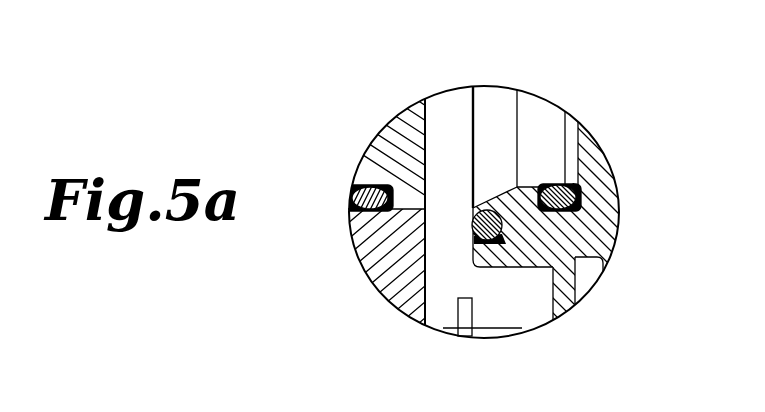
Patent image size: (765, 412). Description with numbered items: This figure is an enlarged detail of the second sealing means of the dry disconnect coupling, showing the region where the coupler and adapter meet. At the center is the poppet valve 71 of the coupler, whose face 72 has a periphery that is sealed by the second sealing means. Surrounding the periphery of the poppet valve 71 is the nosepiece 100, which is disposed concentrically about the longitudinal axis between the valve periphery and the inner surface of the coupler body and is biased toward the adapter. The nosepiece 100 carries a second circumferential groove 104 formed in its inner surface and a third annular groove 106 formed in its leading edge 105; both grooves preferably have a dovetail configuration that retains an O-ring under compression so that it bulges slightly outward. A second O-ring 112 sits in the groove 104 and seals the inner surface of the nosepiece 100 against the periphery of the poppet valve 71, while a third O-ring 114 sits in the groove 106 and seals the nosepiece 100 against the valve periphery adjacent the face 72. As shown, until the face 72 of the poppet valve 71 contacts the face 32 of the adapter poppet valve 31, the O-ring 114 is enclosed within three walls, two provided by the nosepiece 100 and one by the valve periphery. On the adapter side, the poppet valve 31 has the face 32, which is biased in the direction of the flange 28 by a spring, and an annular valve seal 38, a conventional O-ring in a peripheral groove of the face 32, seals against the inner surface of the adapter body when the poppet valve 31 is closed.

The flange 28 is at (422, 233).
The poppet valve 31 is at (392, 139).
The face 32 is at (437, 108).
The annular valve seal 38 is at (353, 192).
The poppet valve 71 is at (538, 127).
The face 72 is at (459, 106).
The nosepiece 100 is at (588, 292).
The second circumferential groove 104 is at (606, 222).
The leading edge 105 is at (474, 243).
The third annular groove 106 is at (480, 243).
The second O-ring 112 is at (583, 196).
The third O-ring 114 is at (472, 229).